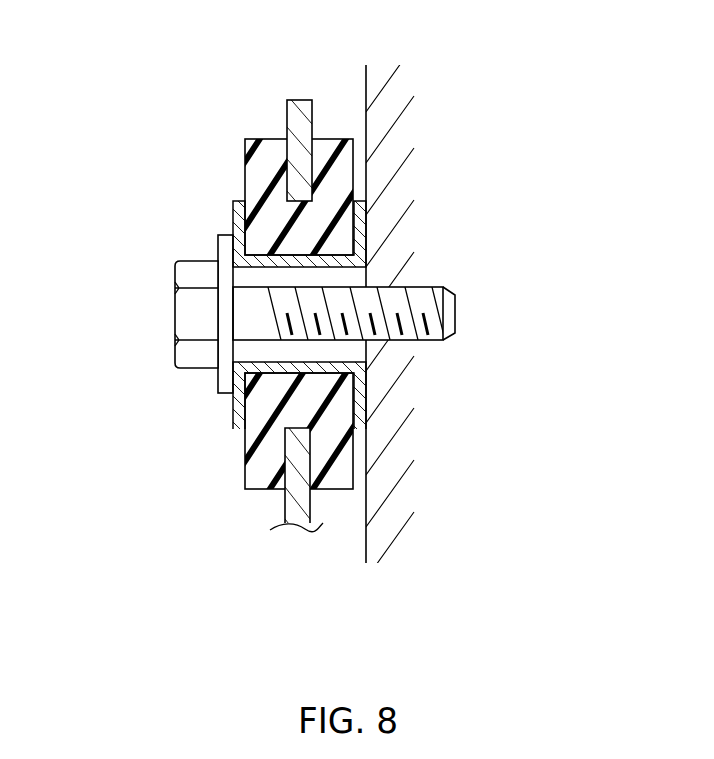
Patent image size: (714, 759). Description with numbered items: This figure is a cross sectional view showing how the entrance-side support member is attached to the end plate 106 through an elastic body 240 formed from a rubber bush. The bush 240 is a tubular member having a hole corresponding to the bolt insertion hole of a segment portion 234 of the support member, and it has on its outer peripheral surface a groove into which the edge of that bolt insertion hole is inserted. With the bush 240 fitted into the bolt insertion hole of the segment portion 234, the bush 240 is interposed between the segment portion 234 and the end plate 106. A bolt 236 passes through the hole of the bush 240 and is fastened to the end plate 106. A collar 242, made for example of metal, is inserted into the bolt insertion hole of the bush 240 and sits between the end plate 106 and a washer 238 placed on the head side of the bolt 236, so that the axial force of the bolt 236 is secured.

The end plate 106 is at (373, 88).
The segment portion 234 is at (286, 505).
The bolt 236 is at (193, 315).
The washer 238 is at (237, 223).
The elastic body 240 is at (253, 439).
The collar 242 is at (362, 393).